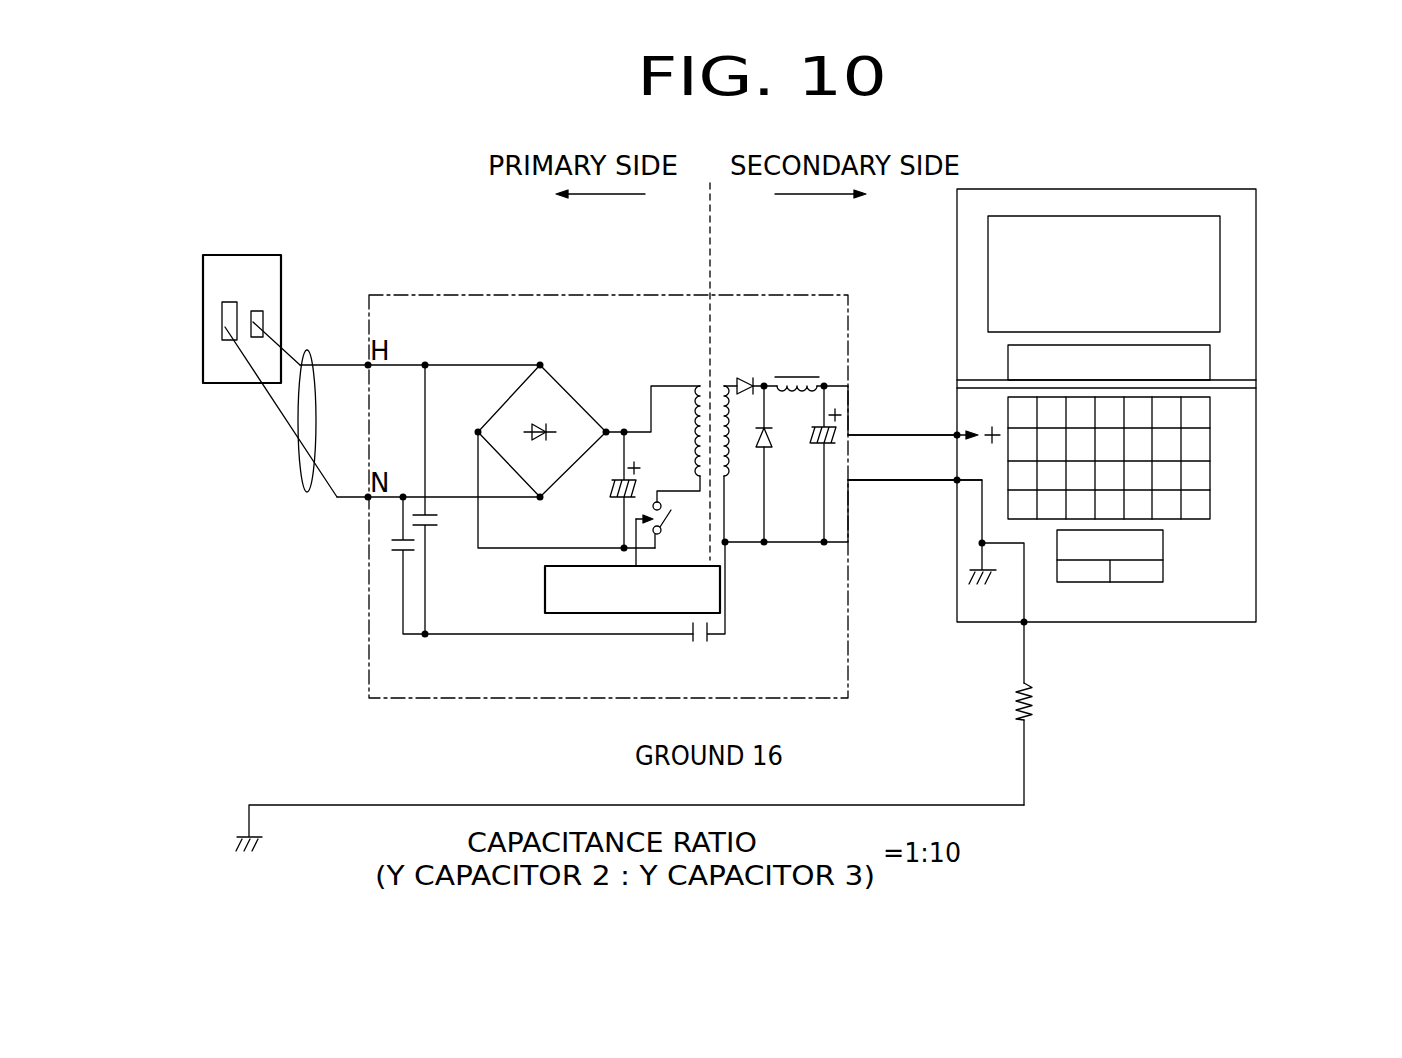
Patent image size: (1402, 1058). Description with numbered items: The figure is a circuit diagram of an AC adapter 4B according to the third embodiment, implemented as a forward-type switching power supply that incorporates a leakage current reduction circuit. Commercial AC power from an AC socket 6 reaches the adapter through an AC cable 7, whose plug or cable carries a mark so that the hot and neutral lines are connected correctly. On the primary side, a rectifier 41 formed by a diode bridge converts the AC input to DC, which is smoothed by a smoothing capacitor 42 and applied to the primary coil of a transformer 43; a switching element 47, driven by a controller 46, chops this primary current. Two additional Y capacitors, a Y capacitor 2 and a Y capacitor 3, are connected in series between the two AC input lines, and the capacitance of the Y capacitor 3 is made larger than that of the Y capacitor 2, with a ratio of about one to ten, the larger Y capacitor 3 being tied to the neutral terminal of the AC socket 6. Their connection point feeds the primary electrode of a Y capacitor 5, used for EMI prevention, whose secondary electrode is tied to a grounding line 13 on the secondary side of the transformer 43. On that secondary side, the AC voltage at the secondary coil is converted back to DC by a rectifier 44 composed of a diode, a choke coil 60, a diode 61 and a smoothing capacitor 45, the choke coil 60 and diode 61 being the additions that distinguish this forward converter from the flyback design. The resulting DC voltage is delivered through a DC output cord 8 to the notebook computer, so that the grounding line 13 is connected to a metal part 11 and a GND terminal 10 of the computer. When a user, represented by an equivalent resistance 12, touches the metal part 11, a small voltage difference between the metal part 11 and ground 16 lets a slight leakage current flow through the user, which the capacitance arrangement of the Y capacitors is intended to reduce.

The AC socket 6 is at (280, 222).
The AC cable 7 is at (311, 352).
The AC adapter 4B is at (540, 294).
The Y capacitor 2 is at (438, 513).
The Y capacitor 3 is at (392, 546).
The Y capacitor 5 is at (722, 652).
The rectifier 41 is at (480, 431).
The smoothing capacitor 42 is at (618, 486).
The transformer 43 is at (706, 385).
The rectifier 44 is at (746, 384).
The choke coil 60 is at (802, 374).
The diode 61 is at (760, 444).
The smoothing capacitor 45 is at (818, 440).
The controller 46 is at (545, 588).
The switching element 47 is at (673, 522).
The DC output cord 8 is at (908, 430).
The grounding line 13 is at (910, 480).
The GND terminal 10 is at (980, 556).
The metal part 11 is at (1026, 625).
The equivalent resistance 12 is at (1033, 707).
The ground 16 is at (652, 804).